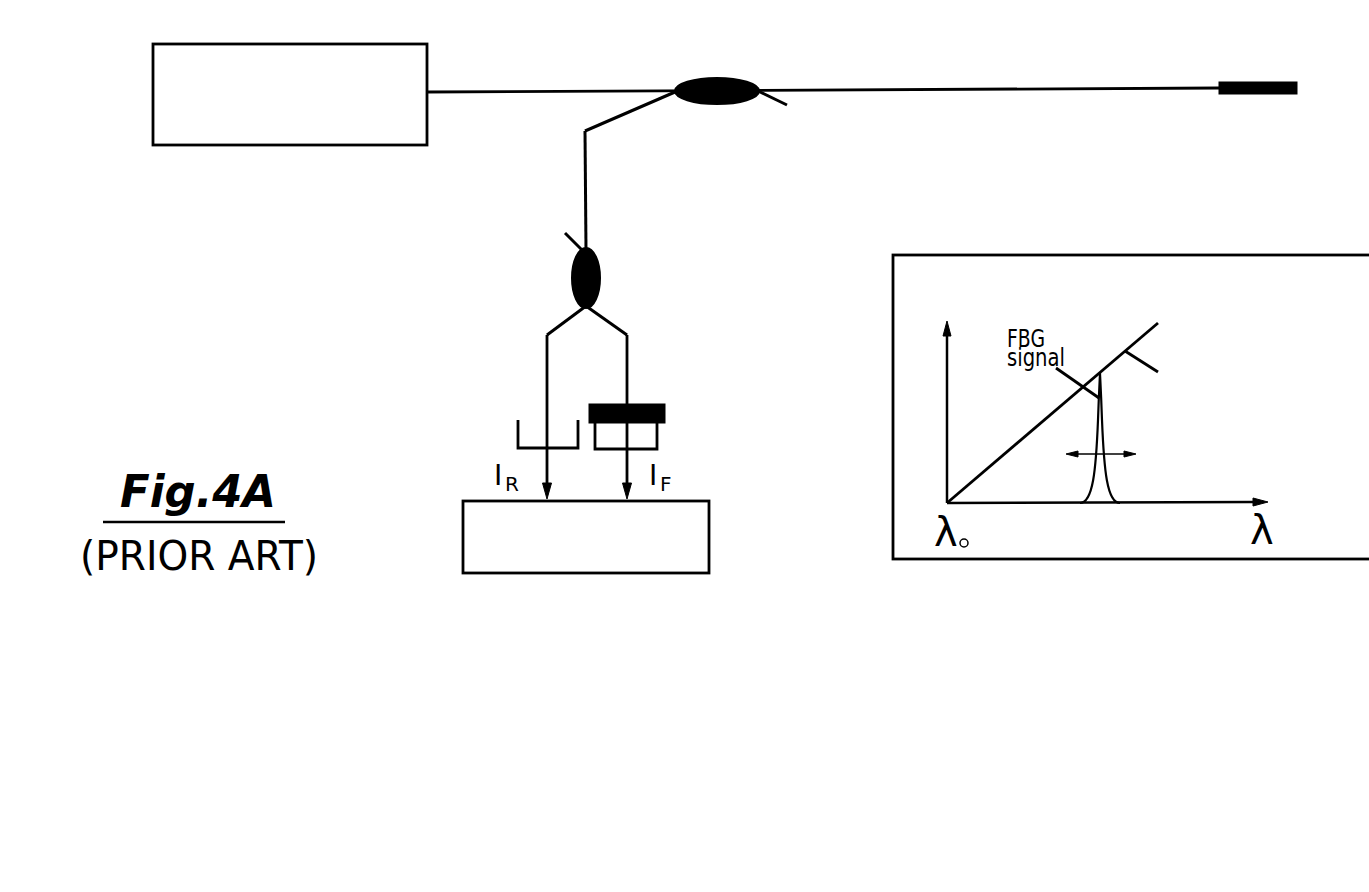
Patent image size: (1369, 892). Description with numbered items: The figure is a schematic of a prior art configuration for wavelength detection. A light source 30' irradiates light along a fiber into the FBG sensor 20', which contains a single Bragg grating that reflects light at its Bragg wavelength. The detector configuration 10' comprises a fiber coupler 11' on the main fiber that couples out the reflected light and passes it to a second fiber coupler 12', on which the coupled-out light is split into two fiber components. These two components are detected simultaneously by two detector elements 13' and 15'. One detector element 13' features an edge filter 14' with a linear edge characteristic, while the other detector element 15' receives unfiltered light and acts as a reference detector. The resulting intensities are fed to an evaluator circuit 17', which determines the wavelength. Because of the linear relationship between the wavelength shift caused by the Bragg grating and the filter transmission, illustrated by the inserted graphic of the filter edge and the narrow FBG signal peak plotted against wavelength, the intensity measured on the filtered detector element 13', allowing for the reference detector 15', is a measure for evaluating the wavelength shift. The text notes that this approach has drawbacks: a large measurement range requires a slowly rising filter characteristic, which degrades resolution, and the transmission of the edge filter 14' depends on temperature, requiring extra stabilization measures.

The light source 30' is at (290, 94).
The fiber coupler 11' is at (703, 86).
The FBG sensor 20' is at (1258, 91).
The detector configuration 10' is at (577, 233).
The fiber coupler 12' is at (562, 284).
The reference detector 15' is at (508, 444).
The edge filter 14' is at (664, 382).
The detector element 13' is at (665, 446).
The evaluator circuit 17' is at (586, 537).